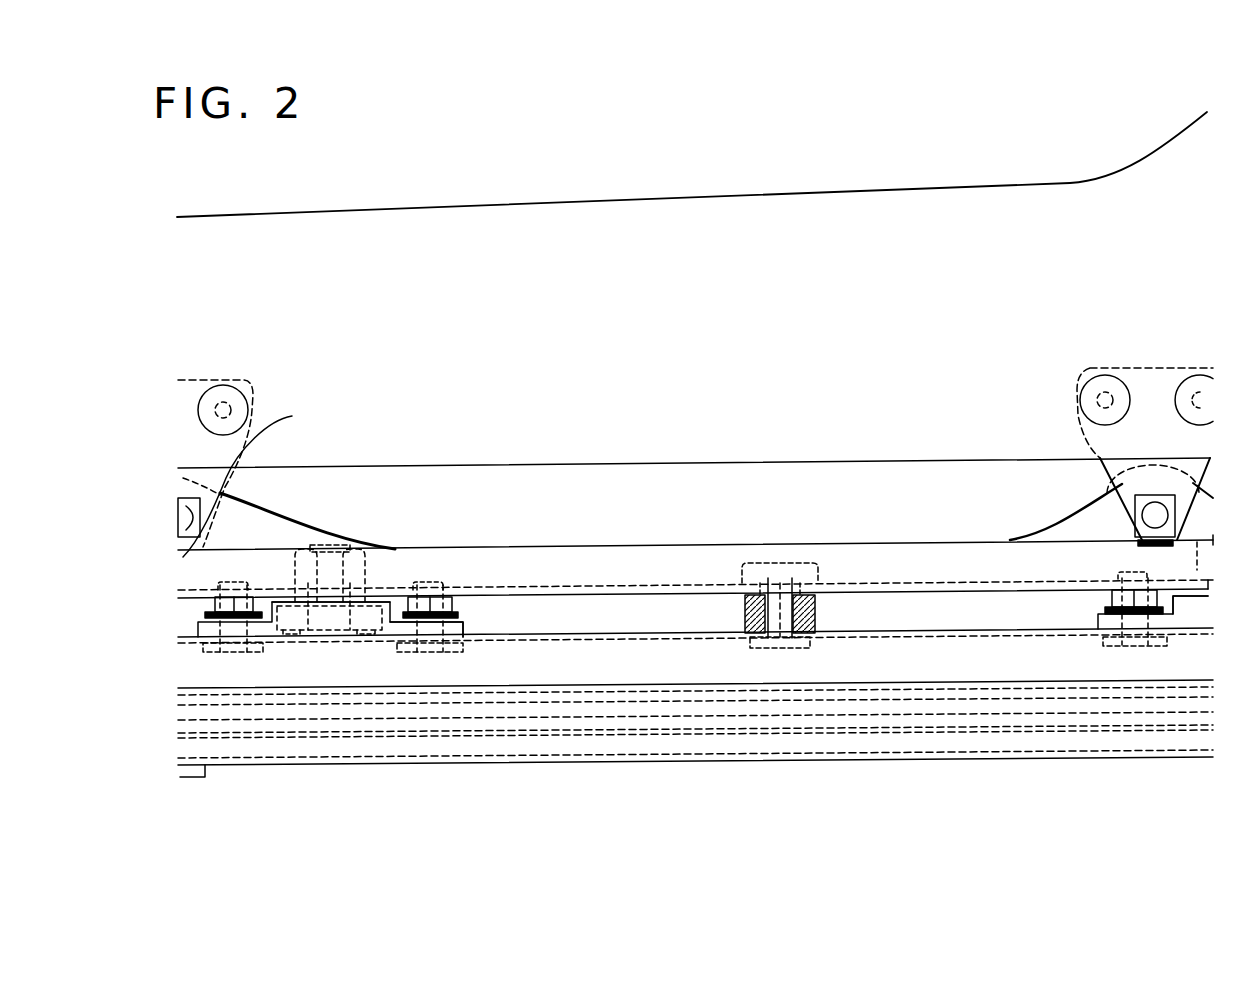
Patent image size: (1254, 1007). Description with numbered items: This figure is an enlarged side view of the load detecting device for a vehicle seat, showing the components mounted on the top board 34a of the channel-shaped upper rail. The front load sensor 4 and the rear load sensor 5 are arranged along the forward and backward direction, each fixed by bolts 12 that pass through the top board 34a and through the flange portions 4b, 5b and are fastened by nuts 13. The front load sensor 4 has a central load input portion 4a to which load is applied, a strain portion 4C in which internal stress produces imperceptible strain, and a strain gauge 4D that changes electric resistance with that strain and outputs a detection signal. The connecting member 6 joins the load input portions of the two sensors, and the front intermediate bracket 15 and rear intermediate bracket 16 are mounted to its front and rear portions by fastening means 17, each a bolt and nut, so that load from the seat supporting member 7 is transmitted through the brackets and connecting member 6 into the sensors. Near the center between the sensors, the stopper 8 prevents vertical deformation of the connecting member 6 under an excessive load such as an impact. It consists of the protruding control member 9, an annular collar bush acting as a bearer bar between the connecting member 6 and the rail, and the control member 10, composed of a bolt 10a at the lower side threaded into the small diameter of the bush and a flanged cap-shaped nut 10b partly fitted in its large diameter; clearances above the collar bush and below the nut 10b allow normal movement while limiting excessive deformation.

The front load sensor 4 is at (321, 648).
The load input portion 4a is at (327, 547).
The flange portion 4b is at (463, 630).
The strain portion 4C is at (372, 603).
The strain gauge 4D is at (293, 637).
The rear load sensor 5 is at (1188, 617).
The flange portion 5b is at (1098, 625).
The connecting member 6 is at (573, 560).
The seat supporting member 7 is at (528, 192).
The stopper 8 is at (769, 512).
The protruding control member 9 is at (817, 610).
The control member 10 is at (763, 665).
The bolt 10a is at (812, 647).
The nut 10b is at (802, 565).
The bolts 12 is at (242, 655).
The nuts 13 is at (452, 607).
The front intermediate bracket 15 is at (251, 479).
The rear intermediate bracket 16 is at (1112, 470).
The fastening means 17 is at (215, 502).
The top board 34a is at (627, 640).